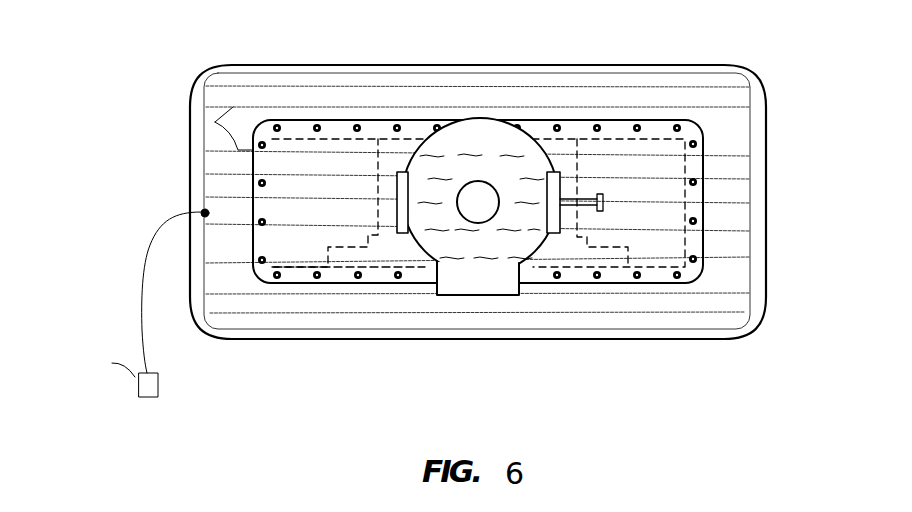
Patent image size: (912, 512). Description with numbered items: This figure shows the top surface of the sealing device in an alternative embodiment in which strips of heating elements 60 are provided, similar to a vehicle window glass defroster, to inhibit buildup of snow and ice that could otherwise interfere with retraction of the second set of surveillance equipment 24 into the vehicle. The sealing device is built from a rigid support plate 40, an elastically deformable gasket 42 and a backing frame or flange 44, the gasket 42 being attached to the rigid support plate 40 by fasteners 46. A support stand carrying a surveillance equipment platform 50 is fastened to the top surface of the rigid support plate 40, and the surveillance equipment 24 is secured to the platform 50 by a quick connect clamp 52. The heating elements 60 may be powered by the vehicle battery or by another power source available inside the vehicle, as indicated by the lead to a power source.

The second set of surveillance equipment 24 is at (387, 167).
The rigid support plate 40 is at (660, 172).
The elastically deformable gasket 42 is at (270, 93).
The backing frame or flange 44 is at (685, 238).
The fasteners 46 is at (358, 278).
The surveillance equipment platform 50 is at (478, 146).
The quick connect clamp 52 is at (555, 172).
The heating elements 60 is at (215, 122).